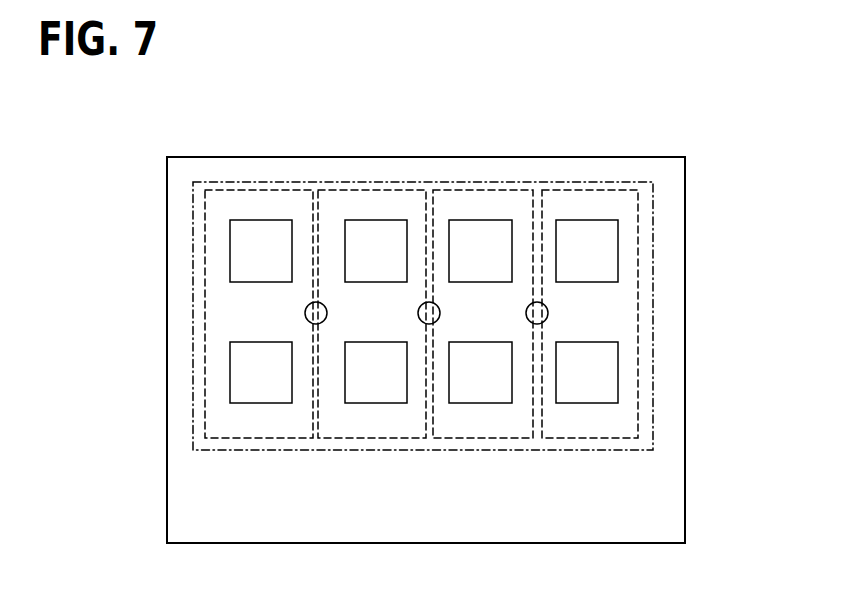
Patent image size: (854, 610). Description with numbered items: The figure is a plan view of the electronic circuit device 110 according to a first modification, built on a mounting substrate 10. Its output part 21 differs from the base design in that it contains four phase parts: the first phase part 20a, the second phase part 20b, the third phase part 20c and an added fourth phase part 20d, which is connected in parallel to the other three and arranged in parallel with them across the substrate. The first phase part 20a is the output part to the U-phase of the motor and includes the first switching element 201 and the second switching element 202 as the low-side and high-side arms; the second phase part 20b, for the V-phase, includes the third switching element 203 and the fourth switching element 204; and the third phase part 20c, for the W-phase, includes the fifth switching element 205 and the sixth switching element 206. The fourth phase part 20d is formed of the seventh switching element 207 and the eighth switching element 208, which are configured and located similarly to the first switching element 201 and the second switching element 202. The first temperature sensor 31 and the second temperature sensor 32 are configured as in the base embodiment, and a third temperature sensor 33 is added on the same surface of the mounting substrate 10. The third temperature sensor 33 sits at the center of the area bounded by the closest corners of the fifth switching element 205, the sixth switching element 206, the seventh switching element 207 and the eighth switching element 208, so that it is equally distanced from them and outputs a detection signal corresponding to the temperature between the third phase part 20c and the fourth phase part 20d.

The electronic circuit device 110 is at (454, 332).
The mounting substrate 10 is at (652, 528).
The output part 21 is at (652, 390).
The first phase part 20a is at (207, 190).
The second phase part 20b is at (329, 190).
The third phase part 20c is at (441, 190).
The fourth phase part 20d is at (552, 190).
The first switching element 201 is at (253, 403).
The second switching element 202 is at (274, 220).
The third switching element 203 is at (368, 403).
The fourth switching element 204 is at (387, 220).
The fifth switching element 205 is at (498, 403).
The sixth switching element 206 is at (496, 220).
The seventh switching element 207 is at (603, 403).
The eighth switching element 208 is at (607, 220).
The first temperature sensor 31 is at (305, 313).
The second temperature sensor 32 is at (433, 323).
The third temperature sensor 33 is at (541, 323).